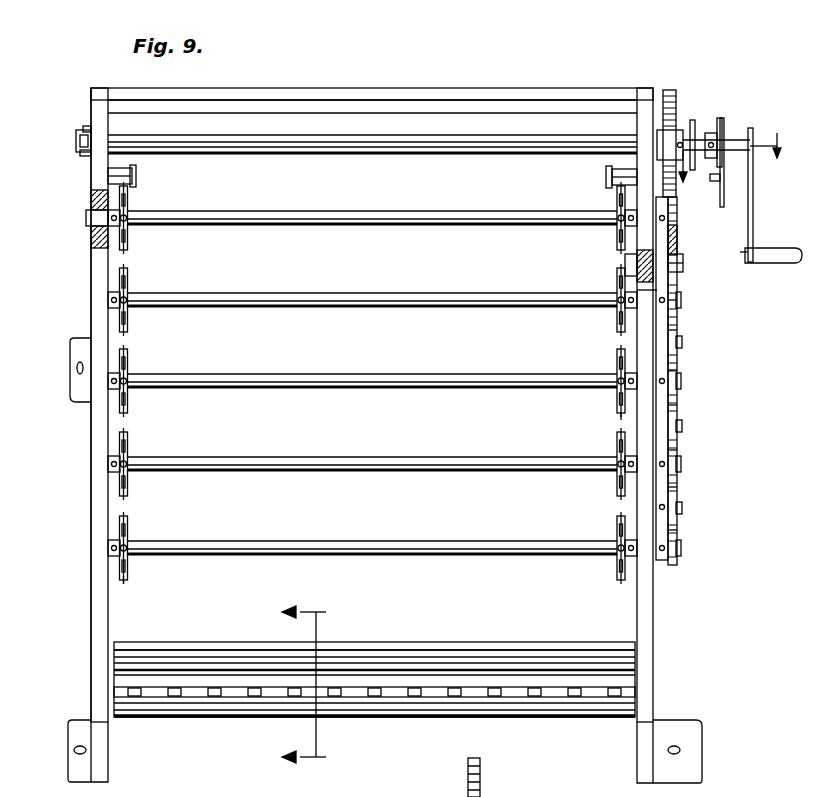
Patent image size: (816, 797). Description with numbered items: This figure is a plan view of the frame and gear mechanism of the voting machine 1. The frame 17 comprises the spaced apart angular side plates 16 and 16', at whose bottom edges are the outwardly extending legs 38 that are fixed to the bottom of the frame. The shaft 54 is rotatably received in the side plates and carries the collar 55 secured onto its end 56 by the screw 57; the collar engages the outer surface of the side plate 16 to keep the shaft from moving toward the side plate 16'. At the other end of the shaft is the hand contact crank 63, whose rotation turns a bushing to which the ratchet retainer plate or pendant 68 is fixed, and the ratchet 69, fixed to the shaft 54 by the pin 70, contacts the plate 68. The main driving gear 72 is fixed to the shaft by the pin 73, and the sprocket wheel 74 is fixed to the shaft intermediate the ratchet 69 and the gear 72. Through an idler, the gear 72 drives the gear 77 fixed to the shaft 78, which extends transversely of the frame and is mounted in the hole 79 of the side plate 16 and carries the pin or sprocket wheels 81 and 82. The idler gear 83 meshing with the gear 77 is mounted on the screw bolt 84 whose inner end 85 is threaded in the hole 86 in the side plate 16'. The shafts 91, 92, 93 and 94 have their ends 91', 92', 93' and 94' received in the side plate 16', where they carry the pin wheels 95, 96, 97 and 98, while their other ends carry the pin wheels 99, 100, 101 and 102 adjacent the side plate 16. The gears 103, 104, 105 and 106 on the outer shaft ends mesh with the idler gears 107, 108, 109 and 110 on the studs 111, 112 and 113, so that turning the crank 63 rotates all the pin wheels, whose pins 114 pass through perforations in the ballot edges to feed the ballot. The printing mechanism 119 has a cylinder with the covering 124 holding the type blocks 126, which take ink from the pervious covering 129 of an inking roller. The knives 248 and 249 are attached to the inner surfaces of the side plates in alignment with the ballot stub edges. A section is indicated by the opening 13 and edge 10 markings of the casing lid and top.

The voting machine 1 is at (452, 102).
The downwardly turned edge 10 is at (736, 161).
The rectangular opening 13 is at (285, 685).
The angular side plate 16 is at (65, 405).
The angular side plate 16' is at (680, 405).
The frame 17 is at (328, 98).
The outwardly extending legs 38 is at (70, 400).
The shaft 54 is at (262, 154).
The collar 55 is at (84, 156).
The end of shaft 56 is at (76, 140).
The screw 57 is at (87, 128).
The hand contact crank 63 is at (754, 165).
The ratchet retainer plate or pendant 68 is at (740, 194).
The ratchet 69 is at (724, 130).
The pin 70 is at (720, 118).
The main driving gear 72 is at (667, 90).
The pin 73 is at (692, 120).
The sprocket wheel 74 is at (712, 133).
The gear 77 is at (668, 232).
The shaft 78 is at (420, 212).
The hole 79 is at (98, 218).
The pin or sprocket wheel 81 is at (129, 206).
The pin or sprocket wheel 82 is at (617, 210).
The idler gear 83 is at (677, 248).
The screw bolt 84 is at (683, 264).
The inner end of screw bolt 85 is at (637, 272).
The hole 86 is at (628, 262).
The shaft 91 is at (372, 282).
The end of shaft 91' is at (712, 291).
The shaft 92 is at (372, 363).
The end of shaft 92' is at (712, 380).
The shaft 93 is at (372, 449).
The end of shaft 93' is at (714, 463).
The shaft 94 is at (372, 534).
The end of shaft 94' is at (707, 550).
The pin wheel 95 is at (617, 315).
The pin wheel 96 is at (617, 400).
The pin wheel 97 is at (617, 484).
The pin wheel 98 is at (617, 568).
The pin wheel 99 is at (128, 286).
The pin wheel 100 is at (128, 368).
The pin wheel 101 is at (128, 450).
The pin wheel 102 is at (128, 532).
The gear 103 is at (672, 302).
The gear 104 is at (672, 370).
The gear 105 is at (672, 452).
The gear 106 is at (672, 531).
The idler gear 107 is at (657, 290).
The idler gear 108 is at (677, 330).
The idler gear 109 is at (677, 406).
The idler gear 110 is at (677, 488).
The stud 111 is at (682, 342).
The stud 112 is at (682, 427).
The stud 113 is at (682, 507).
The pins 114 is at (130, 580).
The printing mechanism 119 is at (404, 688).
The covering 124 is at (218, 720).
The blocks 126 is at (382, 692).
The pervious covering 129 is at (148, 645).
The knife 248 is at (135, 182).
The knife 249 is at (606, 182).